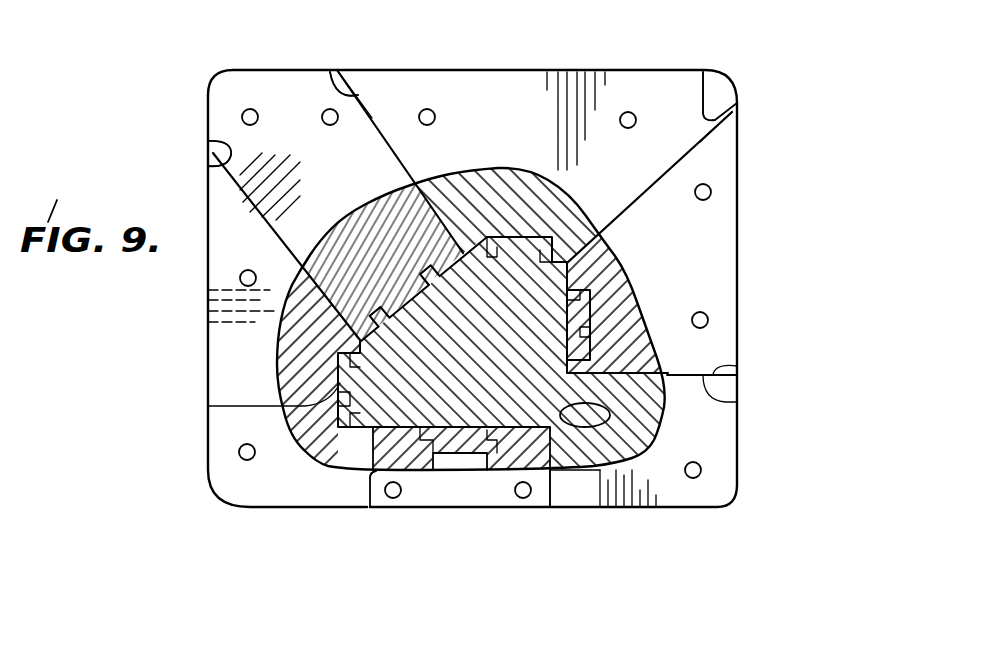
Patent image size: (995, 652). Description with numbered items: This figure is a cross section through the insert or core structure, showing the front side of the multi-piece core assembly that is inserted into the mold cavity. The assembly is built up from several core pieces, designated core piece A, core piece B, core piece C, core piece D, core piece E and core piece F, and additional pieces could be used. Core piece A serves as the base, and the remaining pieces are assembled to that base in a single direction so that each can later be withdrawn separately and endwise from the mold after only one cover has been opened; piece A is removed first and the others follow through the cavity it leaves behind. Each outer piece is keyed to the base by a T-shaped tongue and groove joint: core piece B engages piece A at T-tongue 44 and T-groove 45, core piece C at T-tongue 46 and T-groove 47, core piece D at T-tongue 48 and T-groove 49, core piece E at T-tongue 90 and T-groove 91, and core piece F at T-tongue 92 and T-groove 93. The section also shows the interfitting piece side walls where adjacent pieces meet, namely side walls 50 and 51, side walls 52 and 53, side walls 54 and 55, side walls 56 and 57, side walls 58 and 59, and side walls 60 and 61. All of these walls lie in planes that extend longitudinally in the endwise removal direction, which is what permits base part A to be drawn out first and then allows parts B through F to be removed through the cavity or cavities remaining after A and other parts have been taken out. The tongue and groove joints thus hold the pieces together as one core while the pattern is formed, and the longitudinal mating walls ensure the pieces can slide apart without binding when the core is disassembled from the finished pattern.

The core piece A is at (503, 333).
The core piece B is at (295, 345).
The core piece C is at (627, 247).
The core piece D is at (435, 470).
The core piece E is at (363, 205).
The core piece F is at (473, 167).
The T-tongue 44 is at (350, 362).
The T-groove 45 is at (338, 398).
The T-tongue 46 is at (592, 296).
The T-groove 47 is at (592, 340).
The T-tongue 48 is at (430, 445).
The T-groove 49 is at (482, 452).
The piece side wall 50 is at (372, 452).
The piece side wall 51 is at (372, 474).
The piece side wall 52 is at (212, 142).
The piece side wall 53 is at (212, 182).
The piece side wall 54 is at (372, 118).
The piece side wall 55 is at (353, 68).
The piece side wall 56 is at (700, 140).
The piece side wall 57 is at (703, 75).
The piece side wall 58 is at (737, 366).
The piece side wall 59 is at (740, 402).
The piece side wall 60 is at (550, 482).
The piece side wall 61 is at (552, 478).
The T-tongue 90 is at (422, 266).
The T-groove 91 is at (378, 308).
The T-tongue 92 is at (537, 245).
The T-groove 93 is at (517, 233).